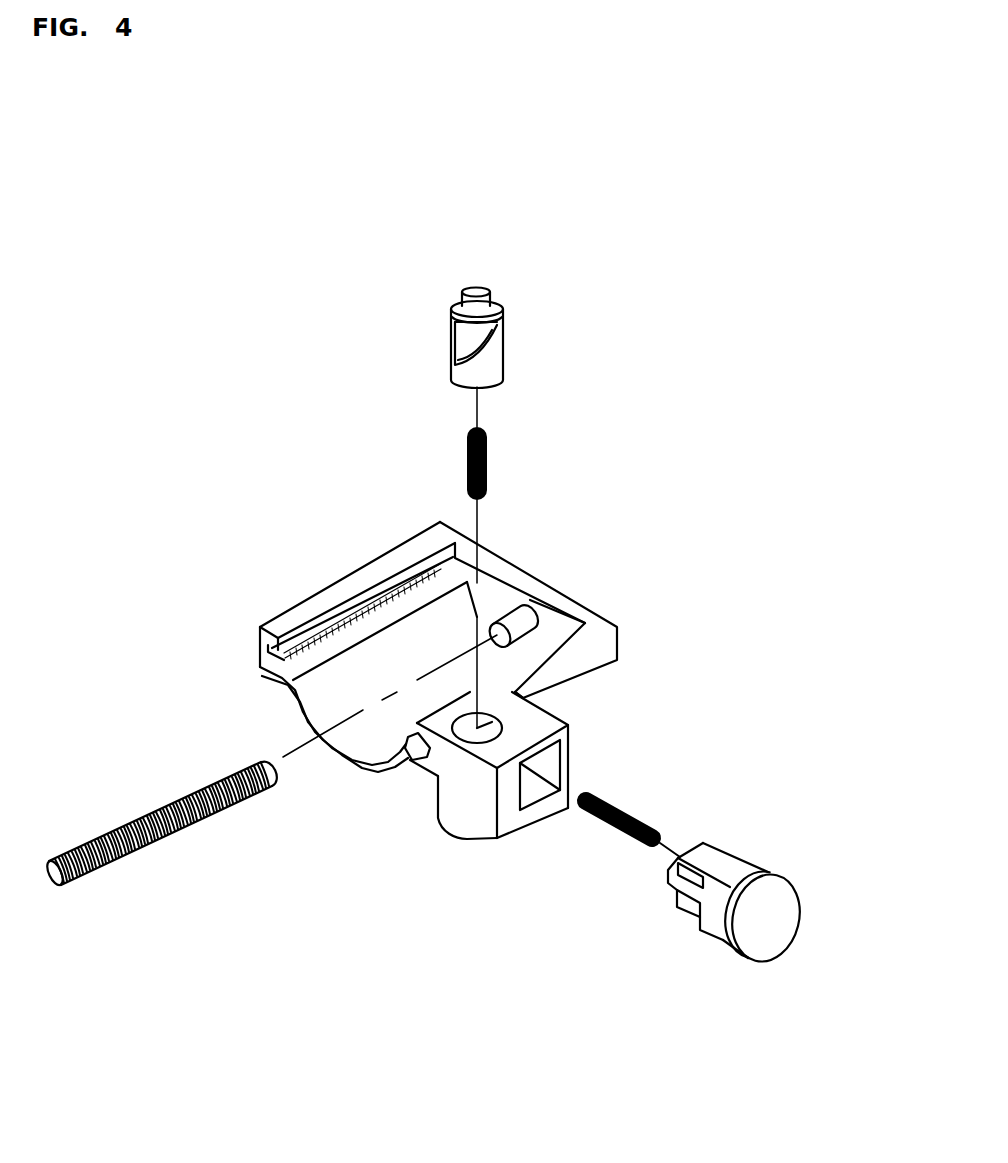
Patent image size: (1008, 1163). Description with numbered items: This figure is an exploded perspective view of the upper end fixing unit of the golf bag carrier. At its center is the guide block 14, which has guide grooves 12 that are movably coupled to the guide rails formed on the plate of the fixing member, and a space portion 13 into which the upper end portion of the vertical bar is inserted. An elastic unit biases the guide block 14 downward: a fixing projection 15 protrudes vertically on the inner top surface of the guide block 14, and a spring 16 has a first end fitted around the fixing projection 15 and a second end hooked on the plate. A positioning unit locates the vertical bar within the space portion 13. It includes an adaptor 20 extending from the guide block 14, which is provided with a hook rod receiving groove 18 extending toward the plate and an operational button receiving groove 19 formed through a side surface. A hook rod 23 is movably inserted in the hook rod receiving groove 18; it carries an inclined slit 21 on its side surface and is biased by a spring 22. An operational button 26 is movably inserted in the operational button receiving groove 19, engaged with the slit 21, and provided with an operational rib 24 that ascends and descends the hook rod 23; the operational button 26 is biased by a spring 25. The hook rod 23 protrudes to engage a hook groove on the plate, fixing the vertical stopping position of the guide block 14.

The guide groove 12 is at (258, 667).
The space portion 13 is at (385, 677).
The guide block 14 is at (518, 552).
The fixing projection 15 is at (519, 621).
The spring 16 is at (142, 853).
The hook rod receiving groove 18 is at (520, 697).
The operational button receiving groove 19 is at (530, 788).
The adaptor 20 is at (458, 788).
The inclined slit 21 is at (463, 341).
The spring 22 is at (486, 455).
The hook rod 23 is at (494, 302).
The operational rib 24 is at (670, 890).
The spring 25 is at (625, 806).
The operational button 26 is at (784, 913).